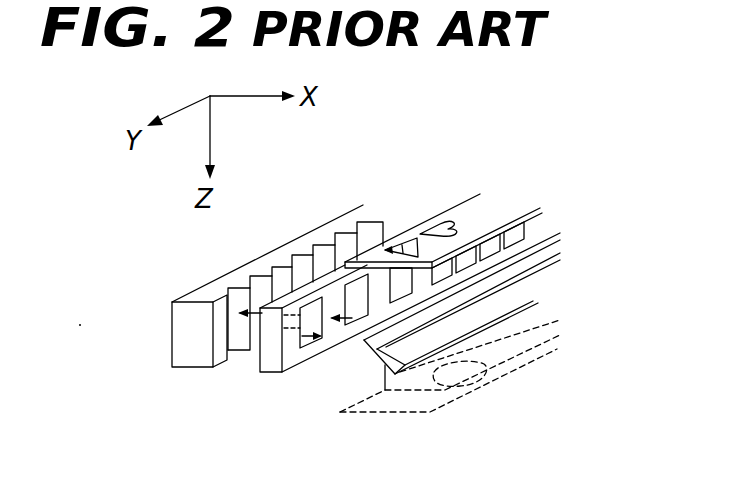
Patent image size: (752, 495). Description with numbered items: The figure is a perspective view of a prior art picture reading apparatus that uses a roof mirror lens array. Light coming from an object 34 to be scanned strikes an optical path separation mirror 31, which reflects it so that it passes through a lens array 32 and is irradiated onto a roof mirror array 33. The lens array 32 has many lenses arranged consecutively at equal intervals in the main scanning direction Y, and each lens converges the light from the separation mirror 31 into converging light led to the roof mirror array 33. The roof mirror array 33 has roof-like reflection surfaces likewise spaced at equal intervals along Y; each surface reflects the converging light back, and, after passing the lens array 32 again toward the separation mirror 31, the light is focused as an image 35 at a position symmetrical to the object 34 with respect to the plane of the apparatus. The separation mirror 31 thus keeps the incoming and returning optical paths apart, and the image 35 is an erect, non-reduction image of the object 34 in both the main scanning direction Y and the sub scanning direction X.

The optical path separation mirror 31 is at (366, 358).
The lens array 32 is at (271, 360).
The roof mirror array 33 is at (191, 360).
The object 34 is at (512, 203).
The image 35 is at (510, 363).